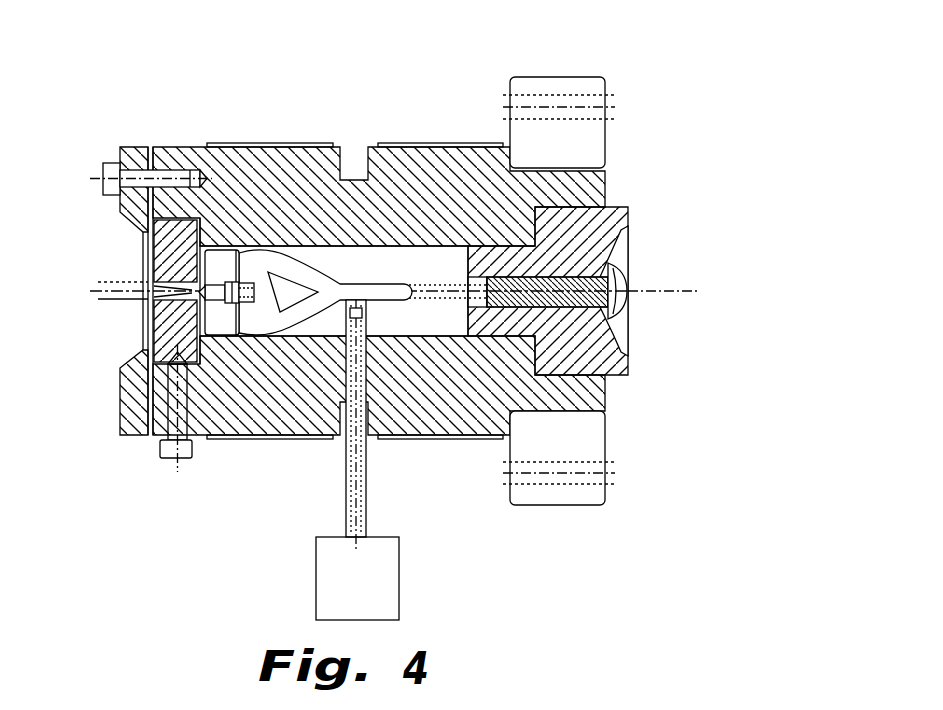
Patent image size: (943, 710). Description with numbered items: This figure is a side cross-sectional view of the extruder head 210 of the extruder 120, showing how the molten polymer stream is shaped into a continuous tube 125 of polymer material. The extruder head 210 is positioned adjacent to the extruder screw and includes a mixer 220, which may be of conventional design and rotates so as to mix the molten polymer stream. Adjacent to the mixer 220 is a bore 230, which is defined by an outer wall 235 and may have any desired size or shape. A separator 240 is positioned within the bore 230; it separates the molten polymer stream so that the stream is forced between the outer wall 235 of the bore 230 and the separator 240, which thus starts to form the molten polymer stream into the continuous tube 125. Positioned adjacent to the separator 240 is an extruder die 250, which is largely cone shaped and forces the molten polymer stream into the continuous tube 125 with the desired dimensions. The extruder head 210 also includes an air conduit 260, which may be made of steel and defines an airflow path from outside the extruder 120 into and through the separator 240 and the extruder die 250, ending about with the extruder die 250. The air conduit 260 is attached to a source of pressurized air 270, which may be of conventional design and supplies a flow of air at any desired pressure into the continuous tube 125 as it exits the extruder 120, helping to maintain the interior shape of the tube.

The extruder 120 is at (143, 95).
The continuous tube 125 is at (108, 281).
The extruder head 210 is at (604, 76).
The mixer 220 is at (628, 282).
The bore 230 is at (406, 327).
The outer wall 235 is at (447, 336).
The separator 240 is at (396, 284).
The extruder die 250 is at (153, 307).
The air conduit 260 is at (368, 471).
The source of pressurized air 270 is at (374, 591).